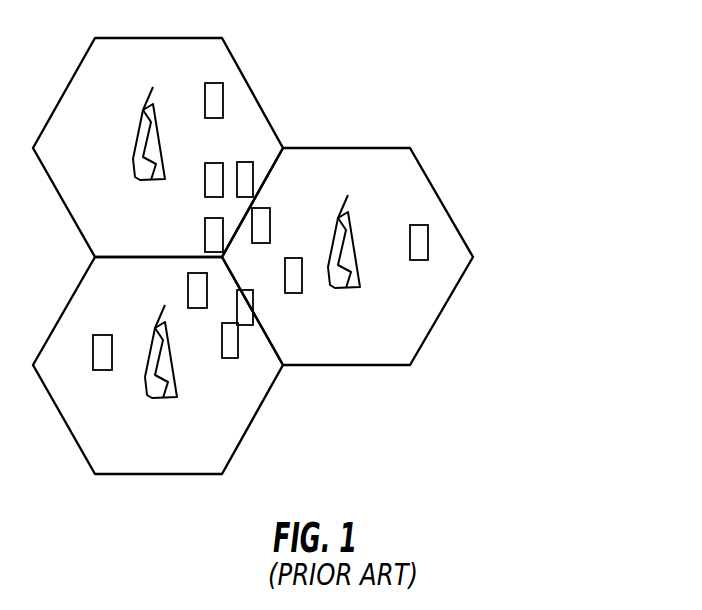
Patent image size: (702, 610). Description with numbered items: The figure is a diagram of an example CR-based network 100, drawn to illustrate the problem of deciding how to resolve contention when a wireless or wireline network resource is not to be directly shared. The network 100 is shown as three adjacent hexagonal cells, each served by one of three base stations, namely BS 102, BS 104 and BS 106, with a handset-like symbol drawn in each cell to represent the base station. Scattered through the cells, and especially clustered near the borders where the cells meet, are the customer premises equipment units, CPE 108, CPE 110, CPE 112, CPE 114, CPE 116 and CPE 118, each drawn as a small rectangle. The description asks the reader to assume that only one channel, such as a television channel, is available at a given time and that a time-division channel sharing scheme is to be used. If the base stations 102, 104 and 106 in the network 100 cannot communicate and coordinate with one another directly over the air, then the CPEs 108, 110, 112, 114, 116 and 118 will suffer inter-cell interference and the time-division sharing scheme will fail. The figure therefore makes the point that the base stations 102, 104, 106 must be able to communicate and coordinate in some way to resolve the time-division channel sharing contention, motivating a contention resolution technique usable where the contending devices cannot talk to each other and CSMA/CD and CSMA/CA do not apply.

The CR-based network 100 is at (478, 150).
The base station 102 is at (138, 140).
The base station 104 is at (147, 384).
The base station 106 is at (353, 227).
The customer premises equipment 108 is at (243, 162).
The customer premises equipment 110 is at (270, 217).
The customer premises equipment 112 is at (205, 235).
The customer premises equipment 114 is at (188, 287).
The customer premises equipment 116 is at (253, 298).
The customer premises equipment 118 is at (222, 347).